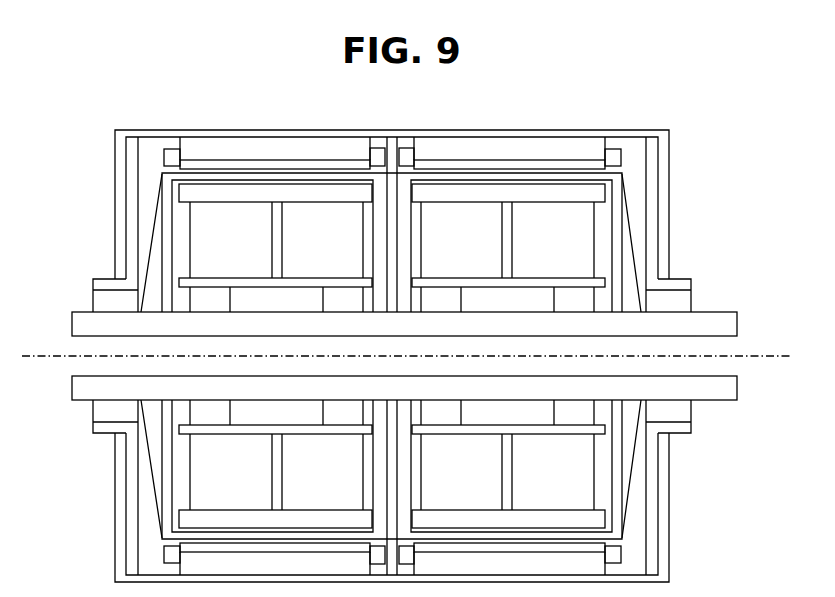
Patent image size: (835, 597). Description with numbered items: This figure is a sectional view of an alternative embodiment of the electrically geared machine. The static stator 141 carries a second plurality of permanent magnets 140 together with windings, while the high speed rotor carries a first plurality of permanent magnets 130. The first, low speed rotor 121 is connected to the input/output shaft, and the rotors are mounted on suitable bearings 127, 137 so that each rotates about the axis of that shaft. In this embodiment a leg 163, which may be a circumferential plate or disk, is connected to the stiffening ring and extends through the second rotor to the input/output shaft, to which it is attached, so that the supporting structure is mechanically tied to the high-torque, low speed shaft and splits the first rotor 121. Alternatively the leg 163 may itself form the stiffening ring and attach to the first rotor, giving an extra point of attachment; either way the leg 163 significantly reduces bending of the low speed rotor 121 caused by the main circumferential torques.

The first, low speed, rotor 121 is at (625, 178).
The bearing 127 is at (690, 295).
The first plurality of permanent magnets 130 is at (587, 525).
The bearing 137 is at (205, 302).
The second plurality of permanent magnets 140 is at (202, 163).
The static stator 141 is at (561, 152).
The leg 163 is at (387, 240).